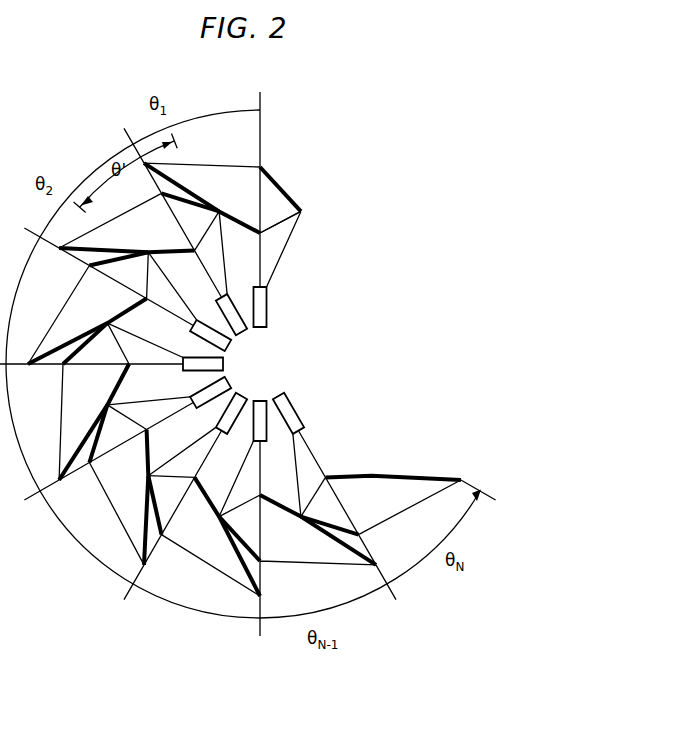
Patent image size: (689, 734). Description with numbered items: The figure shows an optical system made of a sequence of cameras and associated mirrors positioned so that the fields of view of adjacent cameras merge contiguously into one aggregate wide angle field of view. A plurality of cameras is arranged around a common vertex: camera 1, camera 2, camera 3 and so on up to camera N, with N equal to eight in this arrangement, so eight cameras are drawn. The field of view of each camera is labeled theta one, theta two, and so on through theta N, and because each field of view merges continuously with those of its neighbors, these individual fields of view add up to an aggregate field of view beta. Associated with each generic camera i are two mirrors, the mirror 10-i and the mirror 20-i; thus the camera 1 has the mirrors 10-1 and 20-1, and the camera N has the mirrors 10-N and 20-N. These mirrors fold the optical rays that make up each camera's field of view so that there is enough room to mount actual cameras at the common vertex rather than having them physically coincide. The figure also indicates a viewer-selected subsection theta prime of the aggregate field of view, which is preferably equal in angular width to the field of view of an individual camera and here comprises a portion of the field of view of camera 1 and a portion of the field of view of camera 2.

The camera 1 is at (268, 306).
The camera 2 is at (247, 334).
The camera 3 is at (220, 347).
The camera N is at (283, 394).
The mirror 10-1 is at (241, 213).
The mirror 20-1 is at (289, 196).
The mirror 10-i is at (146, 490).
The mirror 20-i is at (110, 414).
The mirror 10-N is at (412, 474).
The mirror 20-N is at (342, 522).